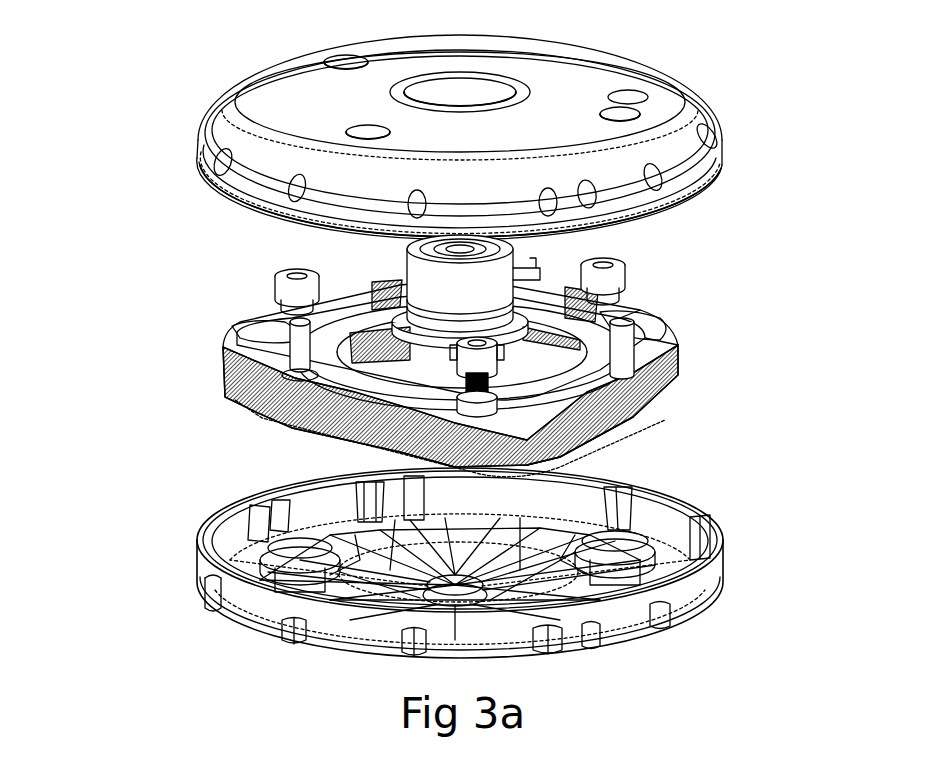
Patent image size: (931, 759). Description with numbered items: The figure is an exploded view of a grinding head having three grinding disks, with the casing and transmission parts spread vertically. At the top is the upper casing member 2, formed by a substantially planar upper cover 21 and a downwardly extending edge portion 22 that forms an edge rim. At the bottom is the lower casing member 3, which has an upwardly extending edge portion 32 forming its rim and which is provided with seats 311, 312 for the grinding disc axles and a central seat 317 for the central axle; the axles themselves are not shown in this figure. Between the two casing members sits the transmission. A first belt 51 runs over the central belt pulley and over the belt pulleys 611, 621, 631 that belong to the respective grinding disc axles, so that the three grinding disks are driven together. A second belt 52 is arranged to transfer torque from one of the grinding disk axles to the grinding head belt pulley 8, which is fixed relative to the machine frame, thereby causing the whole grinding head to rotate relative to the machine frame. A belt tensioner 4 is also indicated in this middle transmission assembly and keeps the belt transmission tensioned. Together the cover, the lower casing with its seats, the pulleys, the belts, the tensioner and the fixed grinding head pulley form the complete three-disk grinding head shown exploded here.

The upper casing member 2 is at (478, 120).
The upper cover 21 is at (622, 72).
The downwardly extending edge portion 22 is at (693, 127).
The belt tensioner 4 is at (475, 355).
The grinding head belt pulley 8 is at (670, 390).
The first belt 51 is at (650, 422).
The second belt 52 is at (678, 341).
The belt pulley 611 is at (644, 315).
The belt pulley 621 is at (248, 338).
The belt pulley 631 is at (578, 444).
The lower casing member 3 is at (463, 579).
The seat 311 is at (625, 545).
The seat 312 is at (222, 587).
The seat 317 is at (488, 582).
The upwardly extending edge portion 32 is at (204, 576).